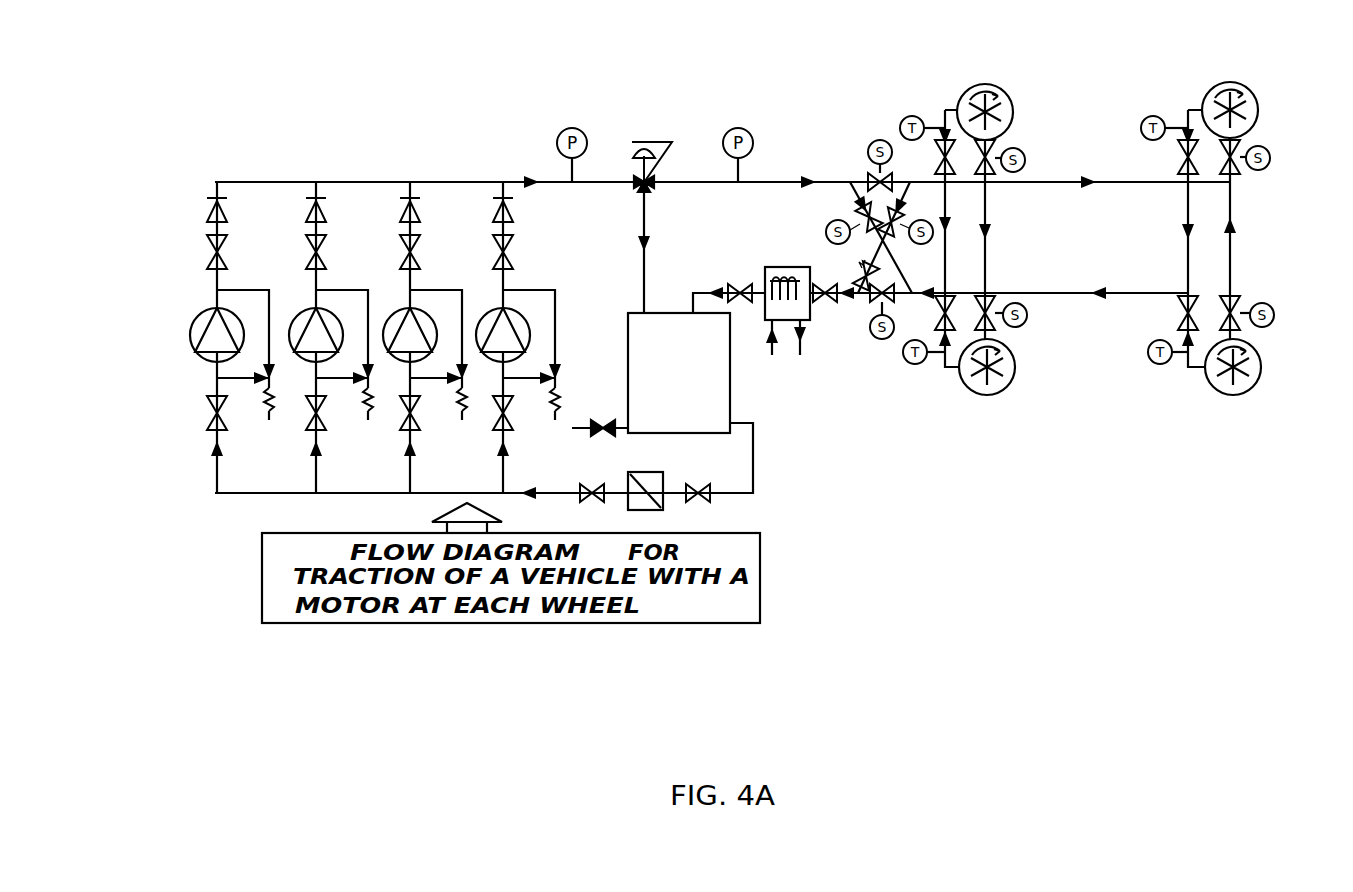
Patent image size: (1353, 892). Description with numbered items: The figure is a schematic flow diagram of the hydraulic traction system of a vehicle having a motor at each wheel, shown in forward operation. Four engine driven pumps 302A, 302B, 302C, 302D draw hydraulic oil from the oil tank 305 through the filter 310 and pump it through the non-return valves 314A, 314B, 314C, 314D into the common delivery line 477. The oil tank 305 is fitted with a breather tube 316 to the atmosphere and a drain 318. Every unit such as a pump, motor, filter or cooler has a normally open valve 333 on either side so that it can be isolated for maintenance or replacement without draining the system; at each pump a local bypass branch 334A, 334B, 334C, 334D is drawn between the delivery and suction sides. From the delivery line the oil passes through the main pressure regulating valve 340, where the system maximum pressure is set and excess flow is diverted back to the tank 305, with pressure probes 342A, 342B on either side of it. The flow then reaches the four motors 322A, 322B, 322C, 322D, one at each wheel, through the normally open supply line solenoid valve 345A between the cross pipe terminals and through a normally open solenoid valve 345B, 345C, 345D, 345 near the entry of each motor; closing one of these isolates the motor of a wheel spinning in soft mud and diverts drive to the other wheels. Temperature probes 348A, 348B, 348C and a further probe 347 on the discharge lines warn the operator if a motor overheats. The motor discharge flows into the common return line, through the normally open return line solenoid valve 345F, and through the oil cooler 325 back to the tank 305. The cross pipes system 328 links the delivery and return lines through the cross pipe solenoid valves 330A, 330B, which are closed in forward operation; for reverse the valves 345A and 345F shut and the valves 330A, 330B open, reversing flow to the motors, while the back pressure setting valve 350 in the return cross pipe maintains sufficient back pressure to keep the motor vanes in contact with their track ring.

The engine driven pump 302A is at (196, 318).
The engine driven pump 302B is at (295, 318).
The engine driven pump 302C is at (389, 318).
The engine driven pump 302D is at (482, 318).
The oil tank 305 is at (679, 373).
The filter 310 is at (643, 472).
The non-return valve 314A is at (224, 212).
The non-return valve 314B is at (323, 205).
The non-return valve 314C is at (418, 204).
The non-return valve 314D is at (510, 206).
The breather tube 316 is at (632, 300).
The drain 318 is at (597, 444).
The motor 322A is at (1002, 88).
The motor 322B is at (1250, 86).
The motor 322C is at (1016, 405).
The motor 322D is at (1262, 405).
The oil cooler 325 is at (777, 267).
The cross pipes system 328 is at (883, 256).
The cross pipe solenoid valve 330A is at (826, 230).
The cross pipe solenoid valve 330B is at (908, 222).
The normally open valve 333 is at (206, 428).
The pump bypass restrictor 334A is at (253, 356).
The pump bypass restrictor 334B is at (352, 356).
The pump bypass restrictor 334C is at (446, 356).
The pump bypass restrictor 334D is at (540, 355).
The main pressure regulating valve 340 is at (685, 172).
The pressure probe 342A is at (552, 146).
The pressure probe 342B is at (775, 150).
The solenoid valve 345 is at (1272, 152).
The supply line solenoid valve 345A is at (866, 148).
The solenoid valve 345B is at (1042, 147).
The solenoid valve 345C is at (1052, 326).
The solenoid valve 345D is at (1275, 318).
The return line solenoid valve 345F is at (868, 340).
The temperature sensor 347 is at (911, 365).
The temperature probe 348A is at (910, 116).
The temperature probe 348B is at (1152, 116).
The temperature probe 348C is at (1156, 365).
The back pressure setting valve 350 is at (856, 272).
The common delivery line 477 is at (716, 180).